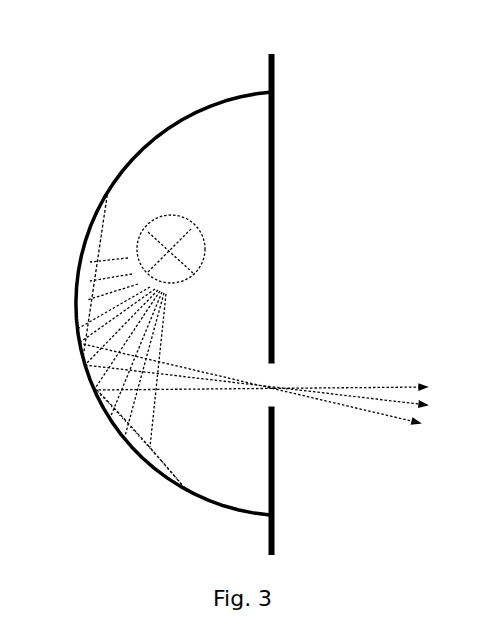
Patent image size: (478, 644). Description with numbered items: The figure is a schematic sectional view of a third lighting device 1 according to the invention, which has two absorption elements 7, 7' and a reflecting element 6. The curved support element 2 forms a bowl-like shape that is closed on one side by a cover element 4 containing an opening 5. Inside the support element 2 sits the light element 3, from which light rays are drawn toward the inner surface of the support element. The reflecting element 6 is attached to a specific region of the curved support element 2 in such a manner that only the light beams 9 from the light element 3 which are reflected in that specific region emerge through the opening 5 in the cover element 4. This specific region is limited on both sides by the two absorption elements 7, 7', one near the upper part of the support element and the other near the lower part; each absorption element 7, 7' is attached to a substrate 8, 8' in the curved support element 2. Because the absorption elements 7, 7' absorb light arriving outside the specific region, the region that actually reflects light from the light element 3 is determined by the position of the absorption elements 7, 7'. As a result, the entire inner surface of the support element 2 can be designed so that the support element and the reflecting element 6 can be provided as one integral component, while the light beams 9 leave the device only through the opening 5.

The lighting device 1 is at (308, 55).
The curved support element 2 is at (136, 137).
The light element 3 is at (205, 203).
The cover element 4 is at (281, 224).
The opening 5 is at (283, 406).
The reflecting element 6 is at (74, 370).
The absorption element 7 is at (69, 274).
The substrate 8 is at (79, 276).
The absorption element 7' is at (140, 448).
The substrate 8' is at (128, 443).
The light beams 9 is at (360, 359).